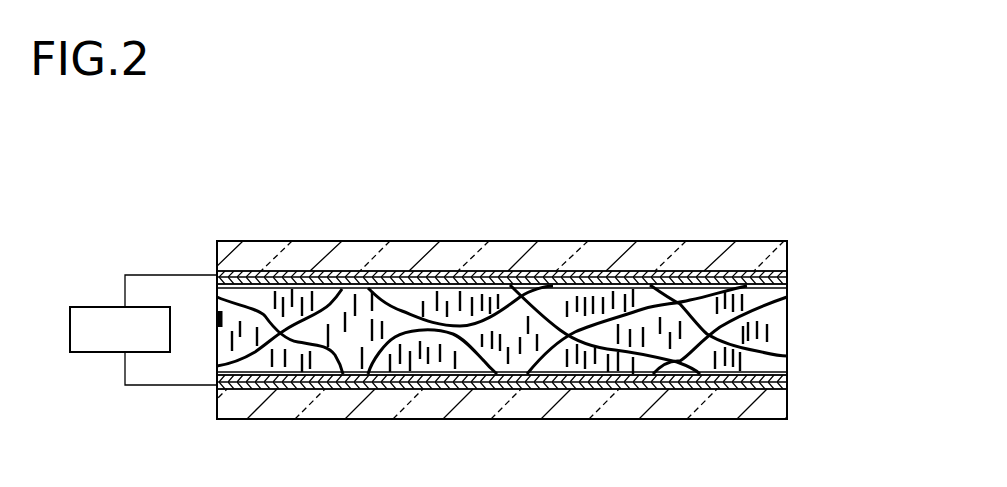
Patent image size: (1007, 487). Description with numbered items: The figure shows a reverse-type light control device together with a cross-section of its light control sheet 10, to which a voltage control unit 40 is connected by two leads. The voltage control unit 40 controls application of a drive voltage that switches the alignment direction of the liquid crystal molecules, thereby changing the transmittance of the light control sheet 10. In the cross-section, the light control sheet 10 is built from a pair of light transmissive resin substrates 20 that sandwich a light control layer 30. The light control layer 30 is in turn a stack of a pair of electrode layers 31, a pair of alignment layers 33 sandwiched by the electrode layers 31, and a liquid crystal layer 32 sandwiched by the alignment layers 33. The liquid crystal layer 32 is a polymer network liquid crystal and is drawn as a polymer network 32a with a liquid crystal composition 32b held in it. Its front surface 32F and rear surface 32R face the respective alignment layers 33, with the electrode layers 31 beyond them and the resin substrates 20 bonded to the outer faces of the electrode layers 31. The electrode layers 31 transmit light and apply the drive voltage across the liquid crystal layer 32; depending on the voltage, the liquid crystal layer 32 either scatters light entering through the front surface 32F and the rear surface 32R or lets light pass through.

The light control sheet 10 is at (748, 190).
The light transmissive resin substrates 20 is at (787, 241).
The light control layer 30 is at (895, 257).
The electrode layers 31 is at (787, 278).
The liquid crystal layer 32 is at (777, 334).
The polymer network 32a is at (336, 362).
The liquid crystal composition 32b is at (268, 296).
The front surface 32F is at (453, 284).
The rear surface 32R is at (430, 376).
The alignment layers 33 is at (787, 286).
The voltage control unit 40 is at (93, 307).